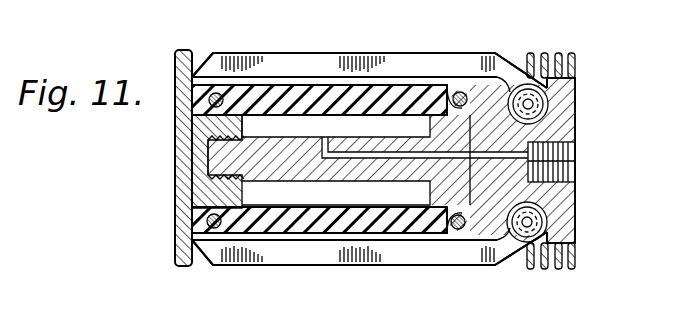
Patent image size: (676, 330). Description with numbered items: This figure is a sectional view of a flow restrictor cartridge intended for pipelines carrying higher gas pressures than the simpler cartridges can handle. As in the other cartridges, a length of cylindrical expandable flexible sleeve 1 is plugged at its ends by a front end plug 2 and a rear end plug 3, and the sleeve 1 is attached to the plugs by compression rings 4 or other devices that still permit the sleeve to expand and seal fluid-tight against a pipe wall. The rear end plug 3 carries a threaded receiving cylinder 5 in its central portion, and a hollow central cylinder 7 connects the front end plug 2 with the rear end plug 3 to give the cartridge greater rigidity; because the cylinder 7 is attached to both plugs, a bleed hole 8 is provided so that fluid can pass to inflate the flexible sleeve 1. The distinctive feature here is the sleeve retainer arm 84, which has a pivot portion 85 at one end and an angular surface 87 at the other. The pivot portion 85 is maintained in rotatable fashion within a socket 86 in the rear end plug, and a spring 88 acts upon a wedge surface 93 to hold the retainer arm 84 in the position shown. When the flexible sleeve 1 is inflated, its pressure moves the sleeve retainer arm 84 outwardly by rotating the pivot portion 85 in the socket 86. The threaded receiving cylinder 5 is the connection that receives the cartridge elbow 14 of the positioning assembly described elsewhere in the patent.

The expandable flexible sleeve 1 is at (374, 100).
The front end plug 2 is at (183, 168).
The rear end plug 3 is at (566, 196).
The compression rings 4 is at (219, 94).
The threaded receiving cylinder 5 is at (575, 156).
The hollow central cylinder 7 is at (307, 176).
The bleed hole 8 is at (325, 138).
The cartridge elbow 14 is at (463, 91).
The sleeve retainer arm 84 is at (268, 62).
The pivot portion 85 is at (531, 101).
The socket 86 is at (545, 112).
The angular surface 87 is at (204, 65).
The spring 88 is at (544, 58).
The wedge surface 93 is at (515, 63).